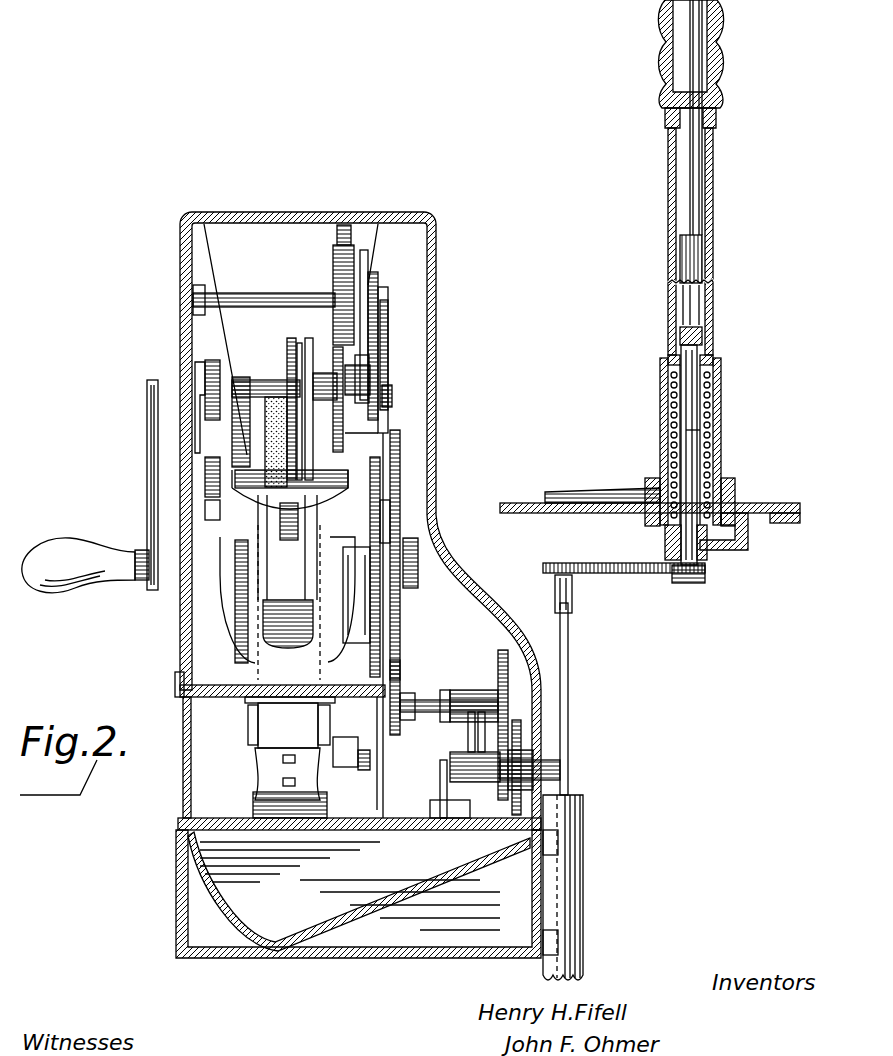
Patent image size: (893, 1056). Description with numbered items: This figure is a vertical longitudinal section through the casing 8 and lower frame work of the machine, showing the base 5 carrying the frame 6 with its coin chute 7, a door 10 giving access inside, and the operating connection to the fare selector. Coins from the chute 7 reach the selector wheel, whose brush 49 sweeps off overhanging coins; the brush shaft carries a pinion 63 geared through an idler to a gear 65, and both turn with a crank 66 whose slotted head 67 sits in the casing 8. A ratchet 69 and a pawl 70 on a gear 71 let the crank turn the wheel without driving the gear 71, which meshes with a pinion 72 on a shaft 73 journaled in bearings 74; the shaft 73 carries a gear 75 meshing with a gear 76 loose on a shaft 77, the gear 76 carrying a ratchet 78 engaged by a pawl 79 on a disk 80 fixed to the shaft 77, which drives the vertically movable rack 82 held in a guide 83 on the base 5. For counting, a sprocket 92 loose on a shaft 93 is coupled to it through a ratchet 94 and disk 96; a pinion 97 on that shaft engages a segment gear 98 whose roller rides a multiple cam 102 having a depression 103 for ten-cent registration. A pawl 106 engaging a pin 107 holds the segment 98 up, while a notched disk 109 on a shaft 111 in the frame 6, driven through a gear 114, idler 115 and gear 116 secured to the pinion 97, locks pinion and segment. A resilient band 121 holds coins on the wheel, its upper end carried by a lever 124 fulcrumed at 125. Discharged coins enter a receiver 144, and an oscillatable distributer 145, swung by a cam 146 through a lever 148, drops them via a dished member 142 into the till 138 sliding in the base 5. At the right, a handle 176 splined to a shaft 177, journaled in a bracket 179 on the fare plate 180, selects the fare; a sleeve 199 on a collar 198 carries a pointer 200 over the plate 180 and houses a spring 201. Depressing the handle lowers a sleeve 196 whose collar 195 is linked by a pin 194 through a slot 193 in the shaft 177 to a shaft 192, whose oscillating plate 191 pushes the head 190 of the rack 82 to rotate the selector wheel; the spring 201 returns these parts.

The base 5 is at (182, 793).
The frame 6 is at (390, 392).
The coin chute 7 is at (291, 339).
The casing 8 is at (303, 212).
The door 10 is at (348, 478).
The brush 49 is at (262, 382).
The pinion 63 is at (245, 435).
The gear 65 is at (240, 600).
The crank 66 is at (150, 490).
The slotted head 67 is at (200, 368).
The ratchet 69 is at (382, 527).
The pawl 70 is at (400, 507).
The gear 71 is at (420, 562).
The pinion 72 is at (396, 736).
The shaft 73 is at (420, 700).
The bearings 74 is at (442, 792).
The gear 75 is at (498, 655).
The gear 76 is at (485, 828).
The shaft 77 is at (455, 762).
The ratchet 78 is at (514, 772).
The pawl 79 is at (512, 742).
The disk 80 is at (520, 755).
The rack 82 is at (568, 640).
The guide 83 is at (576, 888).
The sprocket 92 is at (312, 345).
The shaft 93 is at (240, 375).
The ratchet 94 is at (300, 343).
The disk 96 is at (290, 350).
The pinion 97 is at (352, 422).
The segment gear 98 is at (345, 368).
The multiple cam 102 is at (342, 588).
The depression 103 is at (291, 479).
The pawl 106 is at (348, 484).
The pin 107 is at (340, 466).
The disk 109 is at (354, 278).
The shaft 111 is at (248, 300).
The gear 114 is at (378, 283).
The idler 115 is at (380, 342).
The gear 116 is at (380, 412).
The resilient band 121 is at (288, 547).
The lever 124 is at (222, 478).
The fulcrum 125 is at (245, 540).
The till 138 is at (350, 886).
The dished member 142 is at (258, 806).
The receiver 144 is at (311, 753).
The oscillatable distributer 145 is at (265, 770).
The cam 146 is at (385, 622).
The lever 148 is at (372, 640).
The handle 176 is at (722, 92).
The shaft 177 is at (688, 190).
The bracket 179 is at (750, 548).
The plate 180 is at (518, 502).
The head 190 is at (574, 598).
The oscillating plate 191 is at (588, 563).
The shaft 192 is at (690, 432).
The slot 193 is at (700, 378).
The pin 194 is at (713, 360).
The collar 195 is at (716, 352).
The sleeve 196 is at (713, 226).
The collar 198 is at (665, 548).
The sleeve 199 is at (664, 446).
The pointer 200 is at (600, 492).
The spring 201 is at (670, 396).